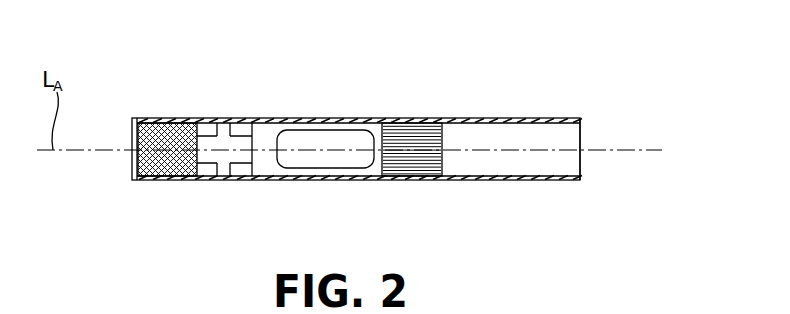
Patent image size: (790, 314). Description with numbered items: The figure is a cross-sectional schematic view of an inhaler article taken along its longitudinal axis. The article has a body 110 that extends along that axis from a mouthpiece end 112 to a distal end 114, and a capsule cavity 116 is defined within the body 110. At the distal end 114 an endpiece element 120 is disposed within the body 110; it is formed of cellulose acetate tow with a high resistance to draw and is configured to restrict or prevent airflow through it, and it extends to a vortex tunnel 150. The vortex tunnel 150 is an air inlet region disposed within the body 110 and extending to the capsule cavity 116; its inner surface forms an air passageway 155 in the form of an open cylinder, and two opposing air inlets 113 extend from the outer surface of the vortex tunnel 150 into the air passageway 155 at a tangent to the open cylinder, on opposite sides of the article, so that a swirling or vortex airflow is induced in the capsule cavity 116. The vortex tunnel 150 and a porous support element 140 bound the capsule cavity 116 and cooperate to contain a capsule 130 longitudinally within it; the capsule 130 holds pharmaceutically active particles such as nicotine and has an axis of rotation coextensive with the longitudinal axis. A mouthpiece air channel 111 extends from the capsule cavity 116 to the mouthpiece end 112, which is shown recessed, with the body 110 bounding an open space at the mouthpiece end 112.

The body 110 is at (376, 180).
The mouthpiece air channel 111 is at (515, 132).
The mouthpiece end 112 is at (588, 202).
The air inlets 113 is at (224, 132).
The distal end 114 is at (131, 105).
The capsule cavity 116 is at (275, 132).
The endpiece element 120 is at (166, 118).
The capsule 130 is at (333, 140).
The porous support element 140 is at (408, 133).
The vortex tunnel 150 is at (208, 133).
The air passageway 155 is at (263, 163).